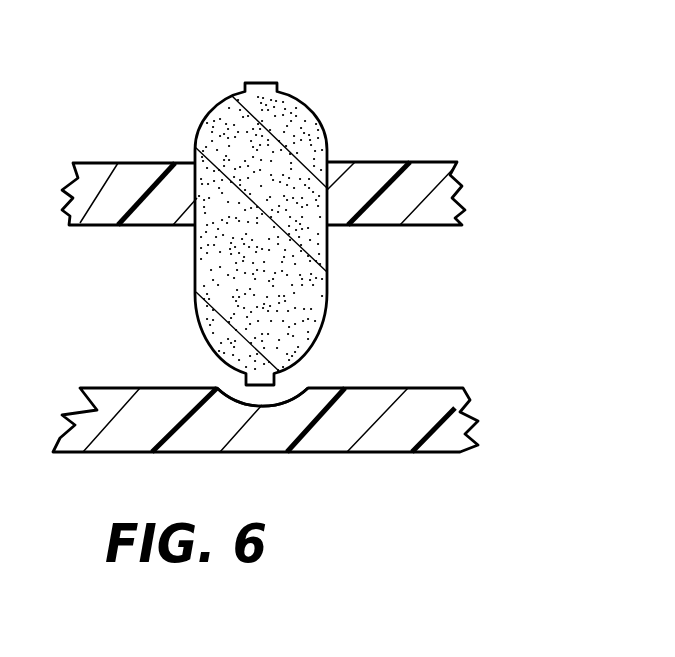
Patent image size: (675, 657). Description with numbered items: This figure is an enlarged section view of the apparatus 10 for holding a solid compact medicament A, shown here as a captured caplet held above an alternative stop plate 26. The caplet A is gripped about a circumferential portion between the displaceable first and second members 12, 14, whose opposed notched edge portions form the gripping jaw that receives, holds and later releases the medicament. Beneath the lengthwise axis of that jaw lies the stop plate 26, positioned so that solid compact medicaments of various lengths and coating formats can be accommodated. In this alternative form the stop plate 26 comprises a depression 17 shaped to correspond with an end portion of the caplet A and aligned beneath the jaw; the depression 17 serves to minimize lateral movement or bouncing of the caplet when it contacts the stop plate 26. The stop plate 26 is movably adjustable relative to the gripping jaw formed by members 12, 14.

The apparatus 10 is at (426, 69).
The first member 12 is at (421, 162).
The second member 14 is at (152, 163).
The depression 17 is at (280, 388).
The stop plate 26 is at (380, 452).
The solid compact medicament A is at (313, 113).